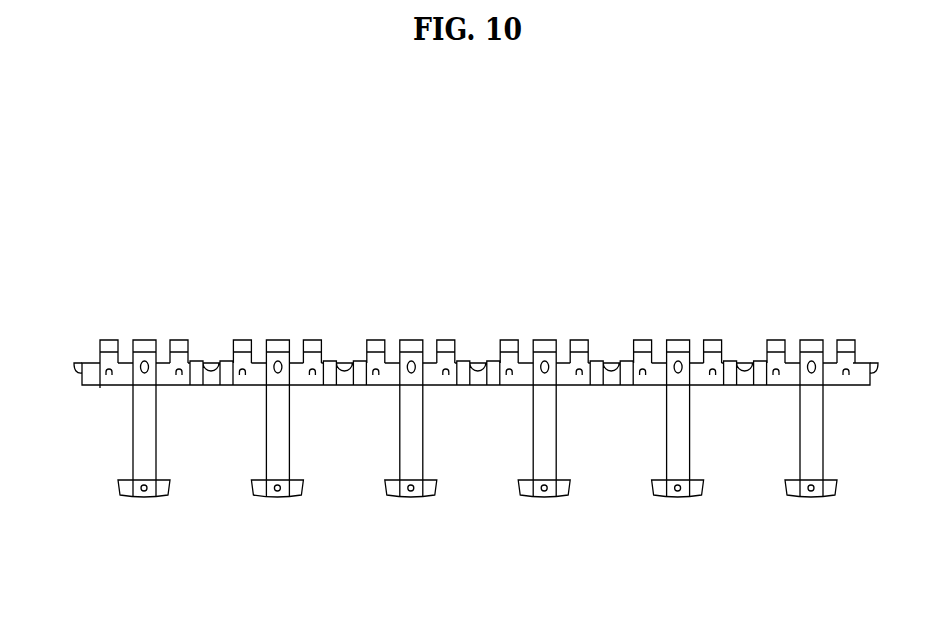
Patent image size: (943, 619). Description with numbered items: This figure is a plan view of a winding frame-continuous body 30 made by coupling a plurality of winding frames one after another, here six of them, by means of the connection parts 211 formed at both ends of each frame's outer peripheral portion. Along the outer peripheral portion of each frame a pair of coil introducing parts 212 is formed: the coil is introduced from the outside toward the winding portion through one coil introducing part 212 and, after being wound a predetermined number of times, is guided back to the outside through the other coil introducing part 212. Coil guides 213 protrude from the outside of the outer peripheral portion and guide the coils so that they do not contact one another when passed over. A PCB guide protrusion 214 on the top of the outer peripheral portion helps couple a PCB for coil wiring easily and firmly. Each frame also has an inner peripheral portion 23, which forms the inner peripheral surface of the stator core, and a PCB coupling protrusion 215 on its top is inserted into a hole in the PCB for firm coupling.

The winding frame-continuous body 30 is at (455, 224).
The connection part 211 is at (78, 373).
The coil introducing part 212 is at (100, 386).
The coil guide 213 is at (109, 340).
The PCB guide protrusion 214 is at (144, 369).
The PCB coupling protrusion 215 is at (143, 491).
The inner peripheral portion 23 is at (160, 497).